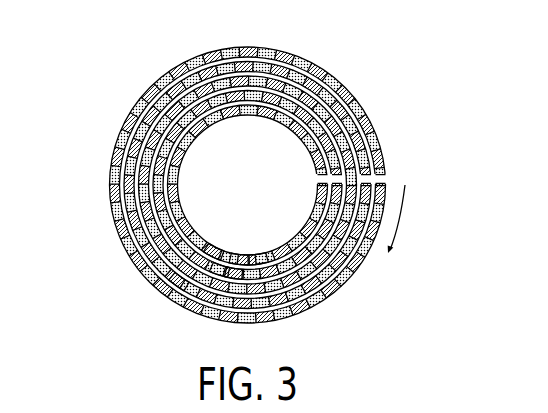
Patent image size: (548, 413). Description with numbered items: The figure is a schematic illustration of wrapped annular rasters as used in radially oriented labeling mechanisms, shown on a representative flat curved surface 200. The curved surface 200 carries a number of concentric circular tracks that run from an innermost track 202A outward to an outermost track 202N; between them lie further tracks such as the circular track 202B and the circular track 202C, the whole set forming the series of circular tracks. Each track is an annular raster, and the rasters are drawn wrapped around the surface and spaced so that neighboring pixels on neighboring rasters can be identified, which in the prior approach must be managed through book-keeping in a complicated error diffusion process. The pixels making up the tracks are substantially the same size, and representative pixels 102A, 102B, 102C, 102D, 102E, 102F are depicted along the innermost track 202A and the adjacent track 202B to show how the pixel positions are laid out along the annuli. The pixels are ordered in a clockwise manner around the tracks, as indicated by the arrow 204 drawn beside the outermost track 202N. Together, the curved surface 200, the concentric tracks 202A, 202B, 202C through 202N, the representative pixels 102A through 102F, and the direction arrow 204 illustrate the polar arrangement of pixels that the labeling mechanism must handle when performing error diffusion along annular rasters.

The flat curved surface 200 is at (222, 170).
The innermost track 202A is at (180, 168).
The circular track 202B is at (185, 147).
The circular track 202C is at (182, 82).
The outermost track 202N is at (118, 134).
The pixel 102A is at (214, 250).
The pixel 102B is at (239, 251).
The pixel 102C is at (258, 251).
The pixel 102D is at (236, 270).
The pixel 102E is at (218, 276).
The pixel 102F is at (178, 283).
The arrow 204 is at (408, 210).